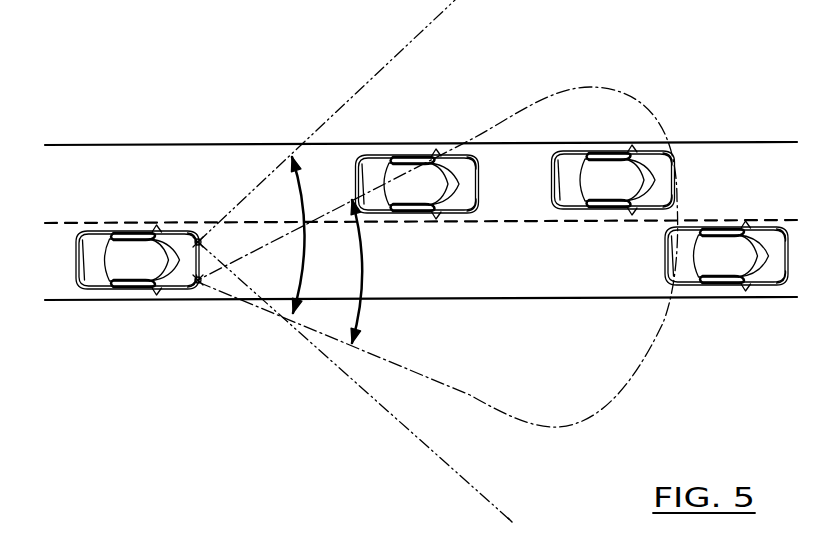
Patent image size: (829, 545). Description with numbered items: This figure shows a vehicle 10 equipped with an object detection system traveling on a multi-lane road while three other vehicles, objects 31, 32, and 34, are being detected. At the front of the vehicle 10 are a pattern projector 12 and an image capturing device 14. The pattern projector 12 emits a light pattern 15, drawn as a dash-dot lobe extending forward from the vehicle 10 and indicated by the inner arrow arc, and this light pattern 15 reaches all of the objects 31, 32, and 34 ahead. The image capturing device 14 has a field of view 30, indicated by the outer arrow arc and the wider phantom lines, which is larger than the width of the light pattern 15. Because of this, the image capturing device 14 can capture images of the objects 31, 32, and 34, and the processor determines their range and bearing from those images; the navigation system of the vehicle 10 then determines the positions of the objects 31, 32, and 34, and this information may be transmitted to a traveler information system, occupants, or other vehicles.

The vehicle 10 is at (134, 292).
The pattern projector 12 is at (186, 290).
The image capturing device 14 is at (197, 238).
The light pattern 15 is at (365, 285).
The field of view 30 is at (303, 197).
The object 31 is at (725, 287).
The object 32 is at (615, 157).
The object 34 is at (417, 158).